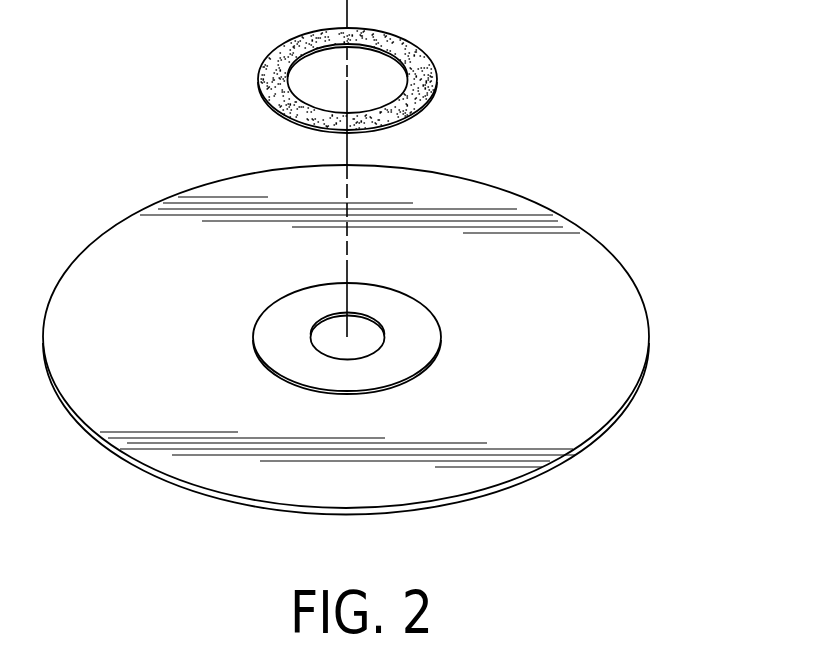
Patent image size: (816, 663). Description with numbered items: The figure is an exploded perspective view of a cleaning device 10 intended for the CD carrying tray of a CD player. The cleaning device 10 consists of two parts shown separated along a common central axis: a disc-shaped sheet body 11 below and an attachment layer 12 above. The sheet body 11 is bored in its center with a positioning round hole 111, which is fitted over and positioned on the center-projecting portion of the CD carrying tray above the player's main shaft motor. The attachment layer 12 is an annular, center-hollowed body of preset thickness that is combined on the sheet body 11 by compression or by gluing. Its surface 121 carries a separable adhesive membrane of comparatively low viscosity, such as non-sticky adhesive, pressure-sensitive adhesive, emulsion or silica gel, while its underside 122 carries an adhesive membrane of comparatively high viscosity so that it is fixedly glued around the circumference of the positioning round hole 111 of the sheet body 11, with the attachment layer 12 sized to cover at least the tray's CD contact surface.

The cleaning device 10 is at (362, 257).
The sheet body 11 is at (558, 228).
The positioning round hole 111 is at (325, 338).
The attachment layer 12 is at (399, 90).
The surface 121 is at (410, 60).
The underside 122 is at (405, 118).